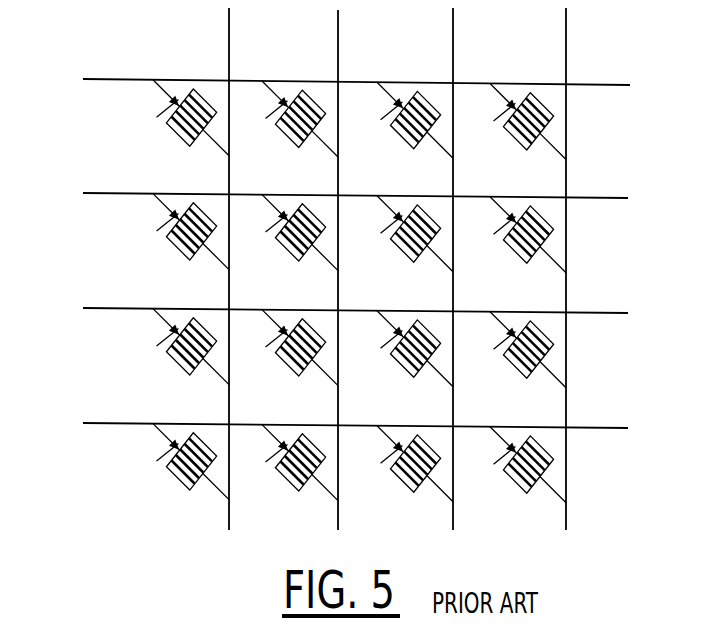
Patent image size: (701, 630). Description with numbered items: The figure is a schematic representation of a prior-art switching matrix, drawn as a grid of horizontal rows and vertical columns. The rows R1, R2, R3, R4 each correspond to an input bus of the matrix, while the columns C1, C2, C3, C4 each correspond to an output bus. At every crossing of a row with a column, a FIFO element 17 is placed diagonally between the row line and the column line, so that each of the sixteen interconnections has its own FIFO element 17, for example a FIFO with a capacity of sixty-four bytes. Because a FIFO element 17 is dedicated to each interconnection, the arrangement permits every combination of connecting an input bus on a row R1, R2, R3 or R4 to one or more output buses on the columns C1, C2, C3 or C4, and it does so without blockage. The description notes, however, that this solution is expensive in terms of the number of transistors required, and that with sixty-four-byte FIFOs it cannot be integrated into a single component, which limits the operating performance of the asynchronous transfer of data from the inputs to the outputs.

The row R1 is at (97, 79).
The row R2 is at (97, 193).
The row R3 is at (97, 308).
The row R4 is at (97, 423).
The column C1 is at (229, 51).
The column C2 is at (338, 51).
The column C3 is at (453, 60).
The column C4 is at (566, 62).
The FIFO element 17 is at (552, 113).